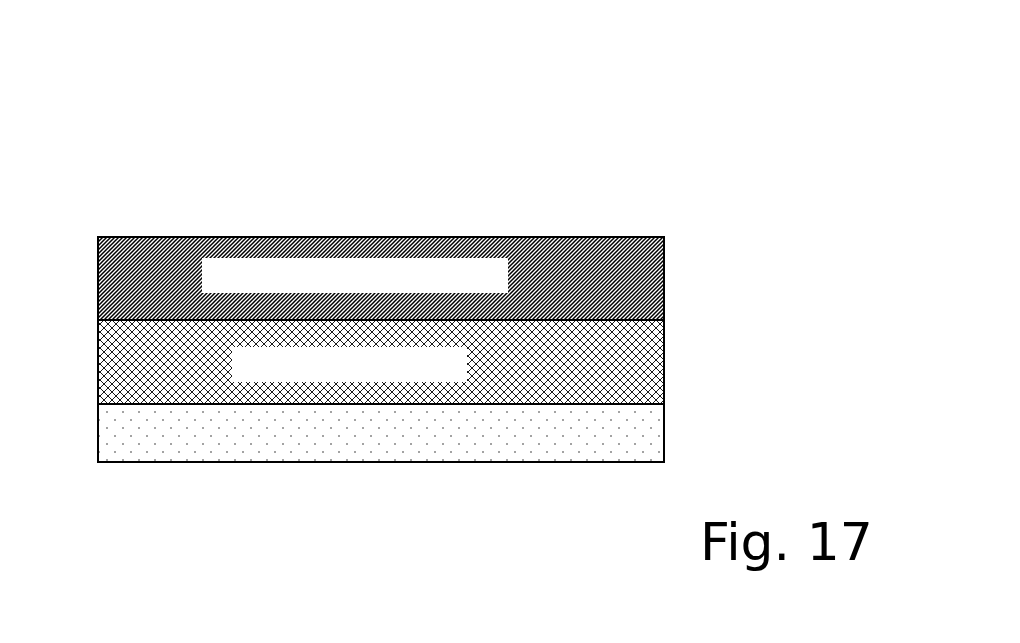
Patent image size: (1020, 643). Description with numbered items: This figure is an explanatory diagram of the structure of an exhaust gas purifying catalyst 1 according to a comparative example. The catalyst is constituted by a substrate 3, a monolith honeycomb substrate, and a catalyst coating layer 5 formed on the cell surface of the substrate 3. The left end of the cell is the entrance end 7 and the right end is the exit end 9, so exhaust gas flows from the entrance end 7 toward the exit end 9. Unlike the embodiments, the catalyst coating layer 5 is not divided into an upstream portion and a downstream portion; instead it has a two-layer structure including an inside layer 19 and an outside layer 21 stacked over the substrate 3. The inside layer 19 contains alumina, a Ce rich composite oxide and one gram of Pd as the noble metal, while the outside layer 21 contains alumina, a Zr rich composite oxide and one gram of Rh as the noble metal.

The exhaust gas purifying catalyst 1 is at (664, 119).
The substrate 3 is at (607, 447).
The catalyst coating layer 5 is at (557, 238).
The entrance end 7 is at (98, 362).
The exit end 9 is at (664, 345).
The inside layer 19 is at (643, 383).
The outside layer 21 is at (664, 273).